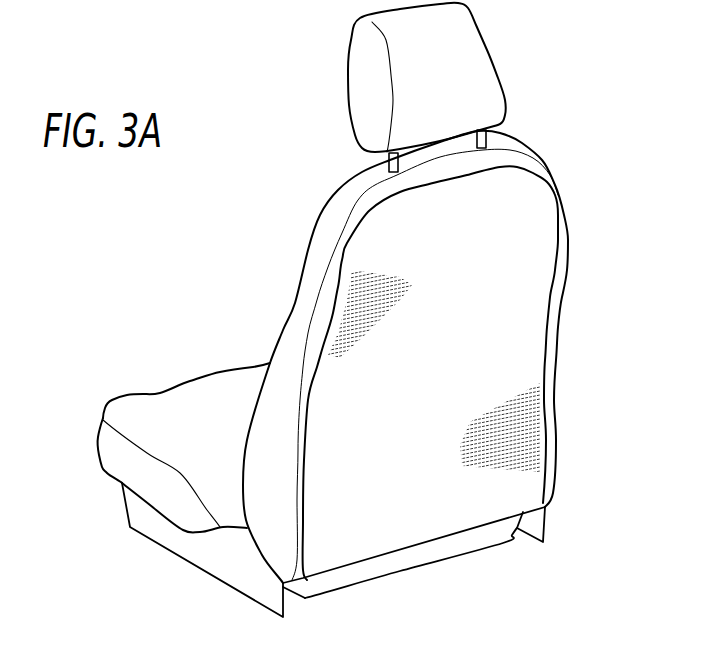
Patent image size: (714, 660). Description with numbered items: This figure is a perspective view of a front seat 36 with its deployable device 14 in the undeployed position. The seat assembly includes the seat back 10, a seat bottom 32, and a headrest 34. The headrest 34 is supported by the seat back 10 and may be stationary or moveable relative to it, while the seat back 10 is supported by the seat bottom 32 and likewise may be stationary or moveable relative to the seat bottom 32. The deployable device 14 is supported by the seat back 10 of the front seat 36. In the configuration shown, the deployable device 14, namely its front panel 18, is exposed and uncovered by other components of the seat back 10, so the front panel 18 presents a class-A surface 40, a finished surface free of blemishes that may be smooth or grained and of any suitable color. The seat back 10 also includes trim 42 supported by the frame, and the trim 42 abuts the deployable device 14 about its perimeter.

The seat back 10 is at (598, 236).
The deployable device 14 is at (483, 347).
The front panel 18 is at (439, 421).
The seat bottom 32 is at (157, 410).
The headrest 34 is at (473, 80).
The front seat 36 is at (180, 587).
The class-A surface 40 is at (463, 248).
The trim 42 is at (299, 303).